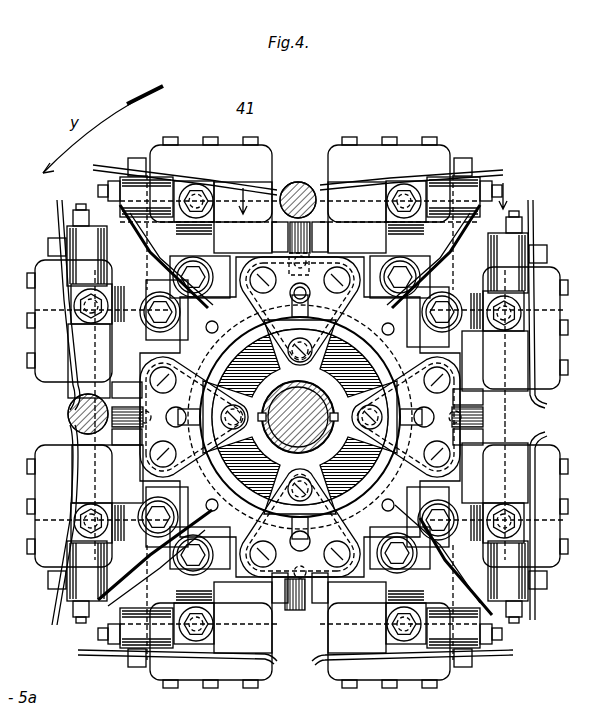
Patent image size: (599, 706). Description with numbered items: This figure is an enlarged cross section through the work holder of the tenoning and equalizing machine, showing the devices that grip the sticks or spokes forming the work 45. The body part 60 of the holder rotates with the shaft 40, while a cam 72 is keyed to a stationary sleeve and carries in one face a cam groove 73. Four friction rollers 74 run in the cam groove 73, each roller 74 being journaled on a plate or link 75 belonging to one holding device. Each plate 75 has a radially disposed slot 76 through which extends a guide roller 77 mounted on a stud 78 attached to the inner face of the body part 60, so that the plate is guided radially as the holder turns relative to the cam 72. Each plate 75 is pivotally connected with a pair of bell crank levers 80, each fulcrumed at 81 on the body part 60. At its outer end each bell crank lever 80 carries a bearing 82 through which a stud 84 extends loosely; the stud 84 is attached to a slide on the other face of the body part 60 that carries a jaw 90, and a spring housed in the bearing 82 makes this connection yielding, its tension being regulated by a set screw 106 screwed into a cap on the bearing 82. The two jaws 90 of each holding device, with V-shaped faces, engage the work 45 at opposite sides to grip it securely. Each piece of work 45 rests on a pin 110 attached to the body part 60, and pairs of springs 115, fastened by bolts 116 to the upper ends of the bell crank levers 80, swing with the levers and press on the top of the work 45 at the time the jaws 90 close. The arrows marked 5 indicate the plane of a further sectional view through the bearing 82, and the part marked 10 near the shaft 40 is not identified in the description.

The section line 5 is at (374, 198).
The chuck body 10 is at (300, 417).
The shaft 40 is at (298, 412).
The work 45 is at (302, 181).
The body part 60 is at (185, 148).
The cam 72 is at (300, 417).
The cam groove 73 is at (300, 417).
The friction roller 74 is at (293, 437).
The plate or link 75 is at (300, 417).
The radially disposed slot 76 is at (300, 417).
The guide roller 77 is at (300, 417).
The stud 78 is at (282, 302).
The bell crank lever 80 is at (225, 260).
The fulcrum 81 is at (193, 273).
The bearing 82 is at (463, 187).
The stud 84 is at (202, 203).
The jaw 90 is at (276, 192).
The set screw 106 is at (98, 190).
The pin 110 is at (290, 241).
The spring 115 is at (238, 182).
The bolt 116 is at (145, 163).